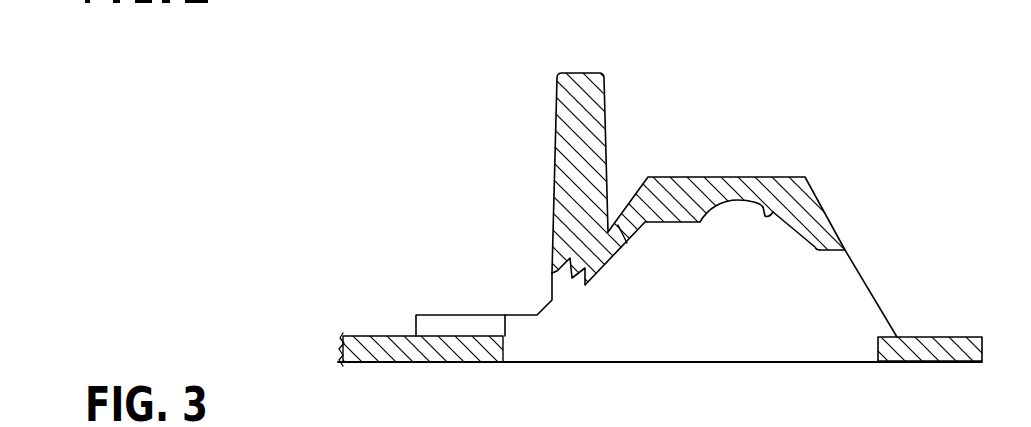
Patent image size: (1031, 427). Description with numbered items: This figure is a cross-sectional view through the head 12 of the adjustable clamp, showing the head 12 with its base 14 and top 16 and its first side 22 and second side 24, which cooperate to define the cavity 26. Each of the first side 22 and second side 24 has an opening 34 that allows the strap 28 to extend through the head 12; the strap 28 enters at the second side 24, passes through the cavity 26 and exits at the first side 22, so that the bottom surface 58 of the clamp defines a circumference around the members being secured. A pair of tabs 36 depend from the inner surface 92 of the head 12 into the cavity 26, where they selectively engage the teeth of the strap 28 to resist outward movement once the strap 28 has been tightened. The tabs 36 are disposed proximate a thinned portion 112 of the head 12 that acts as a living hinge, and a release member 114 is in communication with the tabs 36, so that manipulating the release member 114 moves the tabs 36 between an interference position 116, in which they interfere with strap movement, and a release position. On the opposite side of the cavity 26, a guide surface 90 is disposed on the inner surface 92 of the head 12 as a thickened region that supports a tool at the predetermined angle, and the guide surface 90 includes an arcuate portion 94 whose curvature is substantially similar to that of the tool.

The head 12 is at (679, 166).
The base 14 is at (842, 362).
The top 16 is at (712, 177).
The first side 22 is at (637, 178).
The second side 24 is at (832, 220).
The cavity 26 is at (702, 339).
The strap 28 is at (367, 335).
The opening 34 is at (533, 298).
The tabs 36 is at (578, 283).
The bottom surface 58 is at (457, 361).
The guide surface 90 is at (768, 214).
The inner surface 92 is at (622, 324).
The arcuate portion 94 is at (810, 243).
The thinned portion 112 is at (630, 235).
The release member 114 is at (582, 73).
The interference position 116 is at (540, 112).